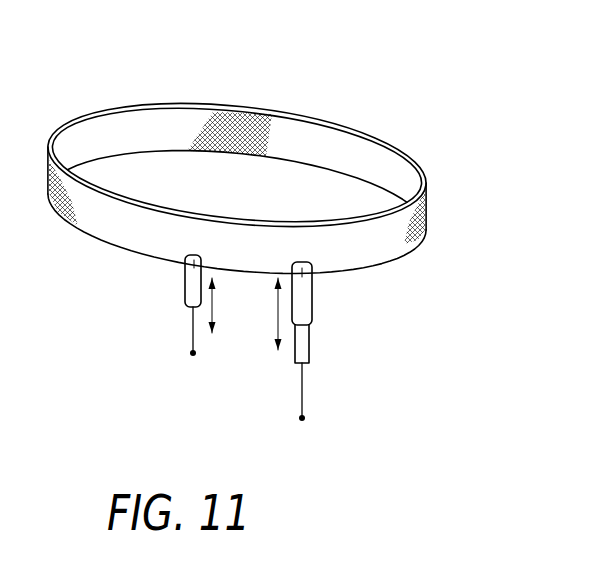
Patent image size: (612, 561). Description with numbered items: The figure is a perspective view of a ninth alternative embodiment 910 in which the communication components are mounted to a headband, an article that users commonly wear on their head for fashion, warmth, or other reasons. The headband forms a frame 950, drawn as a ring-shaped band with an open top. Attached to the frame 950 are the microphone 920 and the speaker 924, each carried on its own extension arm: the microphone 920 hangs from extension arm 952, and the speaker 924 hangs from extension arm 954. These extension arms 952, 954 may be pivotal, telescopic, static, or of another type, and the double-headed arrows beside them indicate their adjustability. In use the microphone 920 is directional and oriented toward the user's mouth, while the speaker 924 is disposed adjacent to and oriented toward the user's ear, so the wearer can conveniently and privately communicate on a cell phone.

The ninth alternative embodiment 910 is at (270, 70).
The frame 950 is at (404, 147).
The extension arm 952 is at (310, 333).
The extension arm 954 is at (192, 330).
The microphone 920 is at (312, 419).
The speaker 924 is at (188, 366).